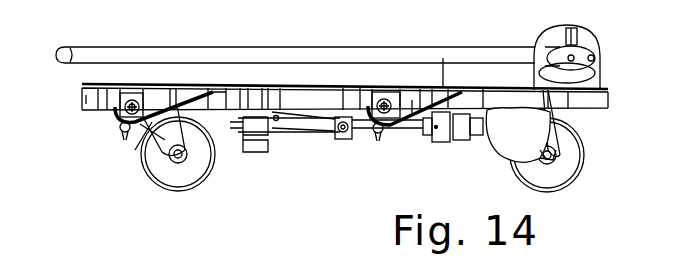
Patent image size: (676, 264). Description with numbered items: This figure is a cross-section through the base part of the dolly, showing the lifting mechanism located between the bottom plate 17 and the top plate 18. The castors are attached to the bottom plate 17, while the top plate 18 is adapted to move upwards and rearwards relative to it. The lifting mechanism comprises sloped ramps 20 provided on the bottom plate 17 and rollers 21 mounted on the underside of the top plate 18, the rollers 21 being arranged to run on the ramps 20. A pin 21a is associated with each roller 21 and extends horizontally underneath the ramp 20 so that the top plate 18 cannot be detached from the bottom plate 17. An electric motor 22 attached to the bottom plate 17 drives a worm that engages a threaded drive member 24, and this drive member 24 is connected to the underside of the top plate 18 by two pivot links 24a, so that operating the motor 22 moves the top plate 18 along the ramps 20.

The bottom plate 17 is at (88, 104).
The top plate 18 is at (108, 82).
The sloped ramps 20 is at (152, 123).
The rollers 21 is at (392, 102).
The pin 21a is at (128, 137).
The electric motor 22 is at (500, 140).
The threaded drive member 24 is at (347, 132).
The pivot links 24a is at (315, 127).